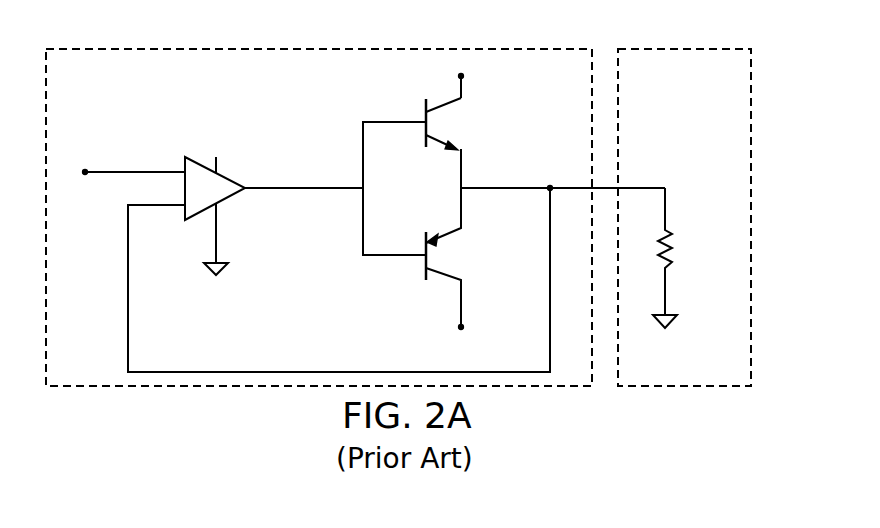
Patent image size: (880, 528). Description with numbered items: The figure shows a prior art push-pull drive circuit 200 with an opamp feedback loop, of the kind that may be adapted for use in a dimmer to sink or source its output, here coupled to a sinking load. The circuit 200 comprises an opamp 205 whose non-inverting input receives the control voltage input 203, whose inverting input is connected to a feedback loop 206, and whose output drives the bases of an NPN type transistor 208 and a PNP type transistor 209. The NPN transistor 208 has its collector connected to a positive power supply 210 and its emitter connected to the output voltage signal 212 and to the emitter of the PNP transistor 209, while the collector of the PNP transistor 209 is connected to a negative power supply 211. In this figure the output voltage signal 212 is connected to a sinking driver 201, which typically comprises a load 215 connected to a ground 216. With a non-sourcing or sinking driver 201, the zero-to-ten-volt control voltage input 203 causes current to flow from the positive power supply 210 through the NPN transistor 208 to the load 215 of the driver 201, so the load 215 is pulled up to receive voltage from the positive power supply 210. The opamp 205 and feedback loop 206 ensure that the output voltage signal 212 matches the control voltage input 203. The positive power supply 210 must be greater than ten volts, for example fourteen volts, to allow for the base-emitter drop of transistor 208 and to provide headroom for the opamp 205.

The push-pull drive circuit 200 is at (356, 49).
The sinking driver 201 is at (680, 49).
The control voltage input Vin 203 is at (70, 157).
The opamp 205 is at (230, 200).
The feedback loop 206 is at (274, 372).
The NPN type transistor 208 is at (430, 150).
The PNP type transistor 209 is at (442, 278).
The positive power supply Vpos 210 is at (482, 67).
The negative power supply Vneg 211 is at (438, 337).
The output voltage signal Vout 212 is at (542, 162).
The load 215 is at (674, 267).
The ground 216 is at (678, 316).